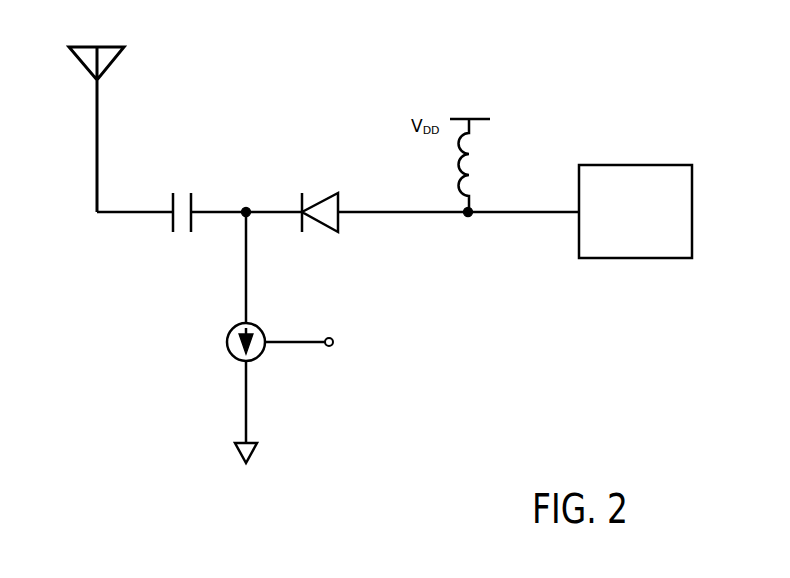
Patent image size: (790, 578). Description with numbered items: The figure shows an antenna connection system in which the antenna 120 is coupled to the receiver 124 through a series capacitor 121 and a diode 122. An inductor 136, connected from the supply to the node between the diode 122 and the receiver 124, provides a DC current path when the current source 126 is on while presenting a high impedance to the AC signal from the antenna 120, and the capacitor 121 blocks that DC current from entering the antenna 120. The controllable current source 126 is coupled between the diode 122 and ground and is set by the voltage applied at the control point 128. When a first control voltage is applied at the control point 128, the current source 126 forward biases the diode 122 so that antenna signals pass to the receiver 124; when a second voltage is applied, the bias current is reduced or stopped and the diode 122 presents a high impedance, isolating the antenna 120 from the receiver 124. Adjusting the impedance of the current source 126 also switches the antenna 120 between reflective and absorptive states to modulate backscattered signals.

The antenna 120 is at (83, 67).
The capacitor 121 is at (192, 197).
The diode 122 is at (338, 197).
The receiver 124 is at (635, 211).
The current source 126 is at (258, 326).
The control point 128 is at (328, 348).
The inductor 136 is at (467, 172).